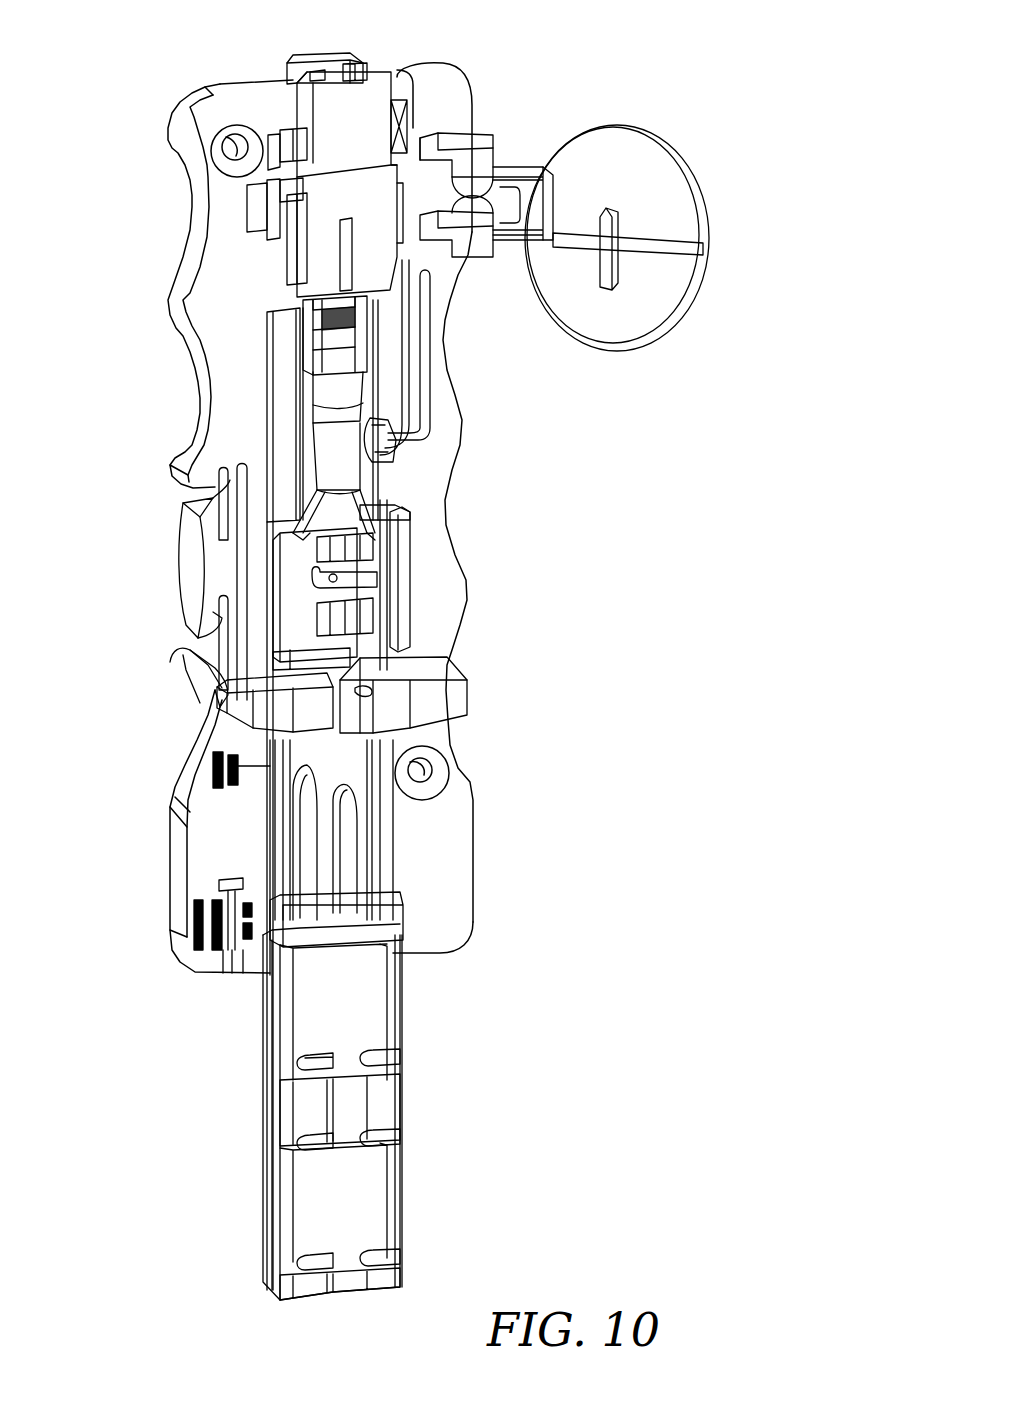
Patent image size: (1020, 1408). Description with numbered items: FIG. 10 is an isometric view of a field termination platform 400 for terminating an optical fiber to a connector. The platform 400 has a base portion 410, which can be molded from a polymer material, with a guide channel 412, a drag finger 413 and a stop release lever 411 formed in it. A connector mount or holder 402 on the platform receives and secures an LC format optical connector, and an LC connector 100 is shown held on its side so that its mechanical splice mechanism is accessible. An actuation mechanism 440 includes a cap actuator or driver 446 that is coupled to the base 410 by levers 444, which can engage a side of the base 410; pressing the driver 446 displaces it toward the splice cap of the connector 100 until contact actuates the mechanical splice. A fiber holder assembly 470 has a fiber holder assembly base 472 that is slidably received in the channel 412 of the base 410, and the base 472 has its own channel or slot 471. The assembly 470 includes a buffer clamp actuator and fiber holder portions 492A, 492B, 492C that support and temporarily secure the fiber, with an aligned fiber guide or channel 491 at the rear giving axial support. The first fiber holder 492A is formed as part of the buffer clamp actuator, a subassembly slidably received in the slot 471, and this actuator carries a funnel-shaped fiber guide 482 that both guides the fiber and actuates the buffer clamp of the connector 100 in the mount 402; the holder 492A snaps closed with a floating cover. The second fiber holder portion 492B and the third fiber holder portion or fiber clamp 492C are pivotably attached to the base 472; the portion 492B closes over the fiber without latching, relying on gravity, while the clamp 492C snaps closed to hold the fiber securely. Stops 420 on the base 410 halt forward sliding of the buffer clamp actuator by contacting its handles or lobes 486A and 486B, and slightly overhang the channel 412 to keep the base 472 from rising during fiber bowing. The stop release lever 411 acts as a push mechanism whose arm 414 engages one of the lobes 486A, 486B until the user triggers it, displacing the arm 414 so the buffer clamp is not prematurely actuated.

The LC connector 100 is at (368, 397).
The platform 400 is at (655, 441).
The connector mount 402 is at (338, 98).
The base portion 410 is at (232, 217).
The stop release lever 411 is at (225, 576).
The guide channel 412 is at (372, 476).
The drag finger 413 is at (412, 437).
The arm 414 is at (225, 680).
The stops 420 is at (345, 548).
The actuation mechanism 440 is at (656, 133).
The levers 444 is at (517, 167).
The cap actuator or driver 446 is at (673, 289).
The fiber holder assembly 470 is at (232, 1053).
The channel or slot 471 is at (330, 850).
The fiber holder assembly base 472 is at (268, 1190).
The funnel-shaped fiber guide 482 is at (395, 516).
The buffer clamp handle or lobe 486A is at (237, 690).
The buffer clamp handle or lobe 486B is at (435, 697).
The fiber guides or channel 491 is at (340, 1290).
The first fiber holder 492A is at (300, 610).
The second fiber holder portion 492B is at (360, 993).
The third fiber holder portion or fiber clamp 492C is at (360, 1185).